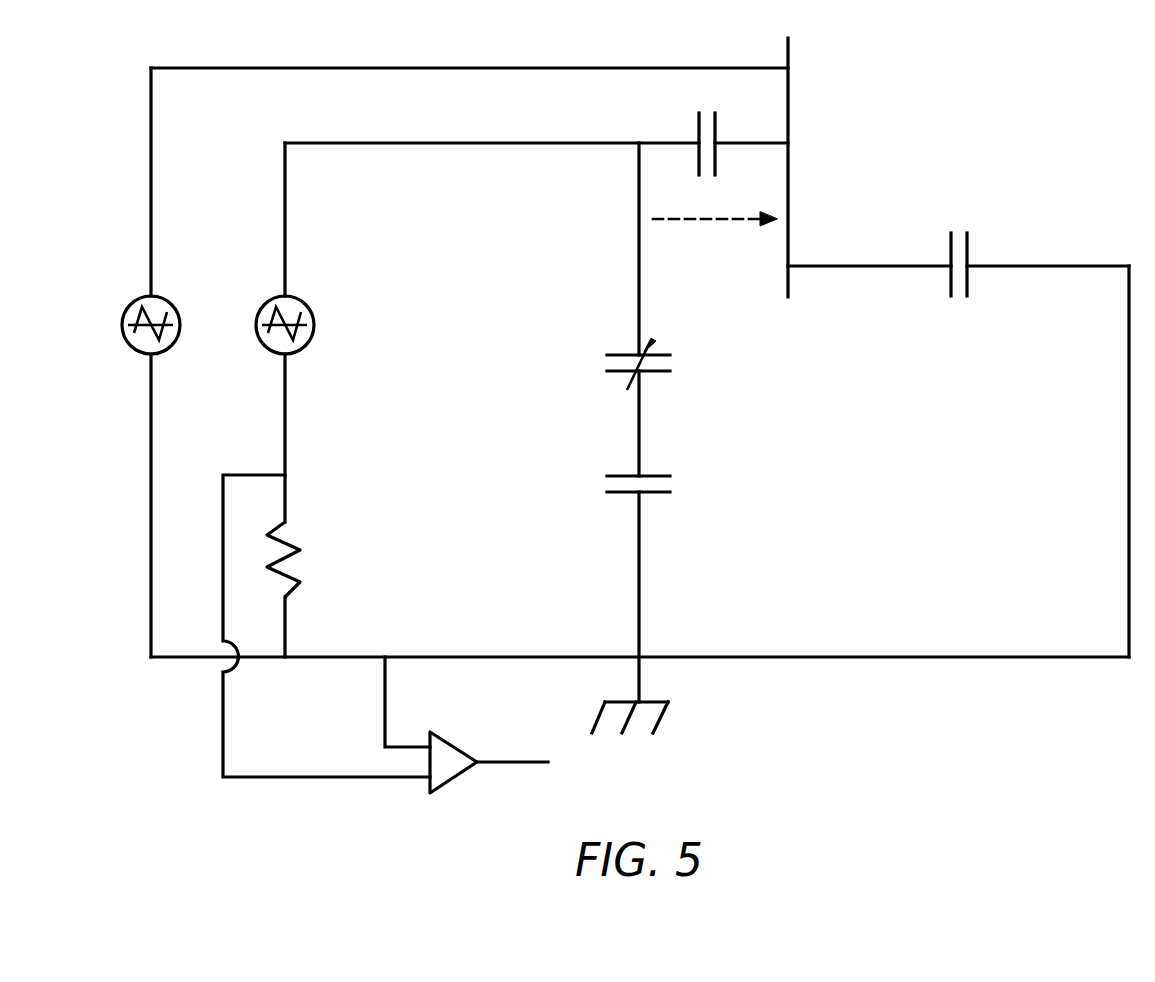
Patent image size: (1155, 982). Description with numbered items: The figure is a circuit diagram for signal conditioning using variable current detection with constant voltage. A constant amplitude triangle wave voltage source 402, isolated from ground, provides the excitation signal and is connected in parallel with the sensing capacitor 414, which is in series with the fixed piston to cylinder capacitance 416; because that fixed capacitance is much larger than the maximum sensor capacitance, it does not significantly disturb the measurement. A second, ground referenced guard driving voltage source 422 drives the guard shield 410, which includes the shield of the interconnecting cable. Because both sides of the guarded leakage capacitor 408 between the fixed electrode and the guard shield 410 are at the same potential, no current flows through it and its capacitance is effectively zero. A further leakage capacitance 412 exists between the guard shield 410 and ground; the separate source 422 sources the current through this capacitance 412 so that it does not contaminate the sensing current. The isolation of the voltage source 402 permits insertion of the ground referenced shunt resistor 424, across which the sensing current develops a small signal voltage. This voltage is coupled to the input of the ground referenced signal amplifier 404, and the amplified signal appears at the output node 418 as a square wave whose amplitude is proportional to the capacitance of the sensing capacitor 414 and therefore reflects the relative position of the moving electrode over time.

The voltage source 402 is at (265, 300).
The signal amplifier 404 is at (452, 773).
The guarded leakage capacitor 408 is at (695, 130).
The guard shield 410 is at (790, 97).
The leakage capacitance 412 is at (967, 245).
The sensing capacitor 414 is at (652, 372).
The piston to cylinder capacitance 416 is at (652, 492).
The output node 418 is at (500, 765).
The guard driving voltage source 422 is at (132, 300).
The ground referenced shunt resistor 424 is at (285, 534).